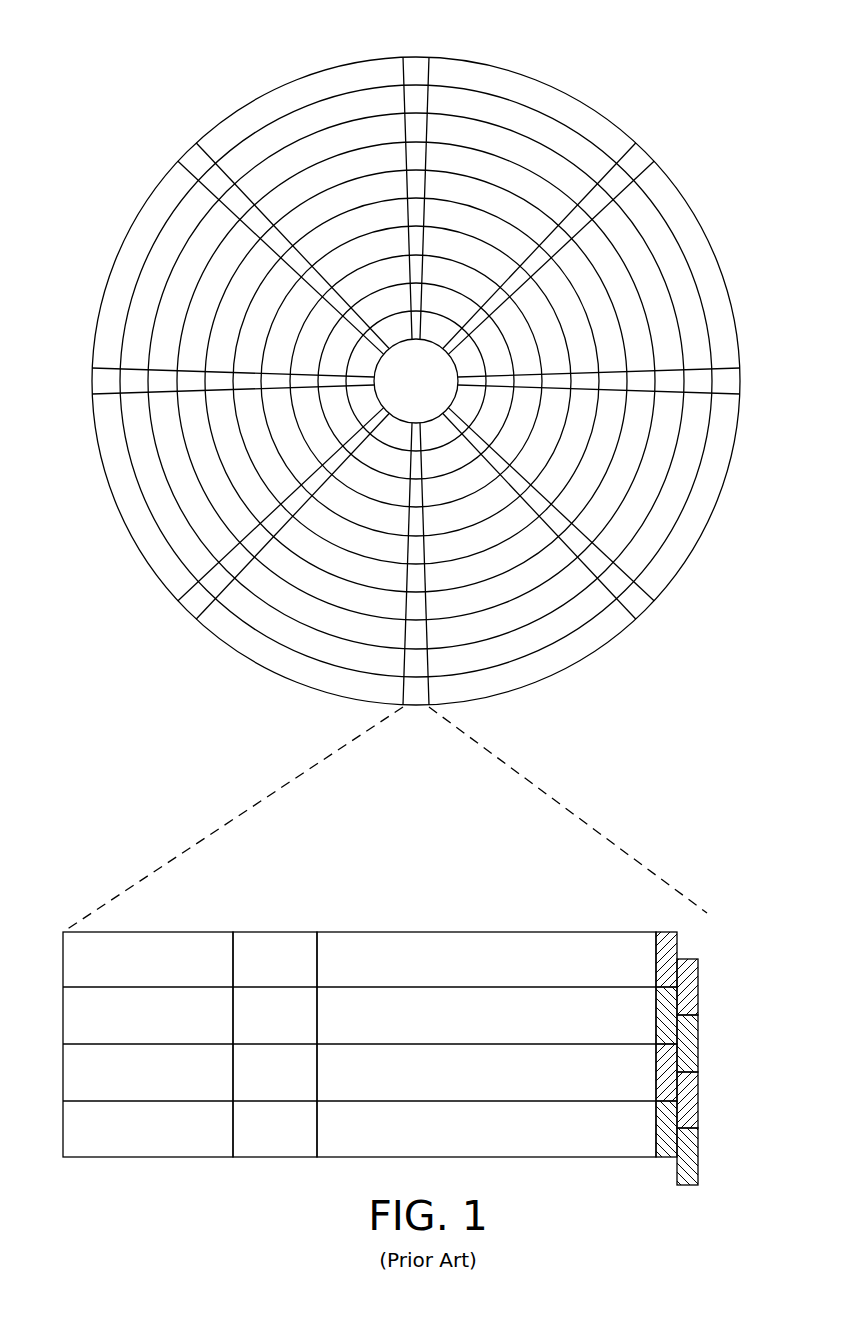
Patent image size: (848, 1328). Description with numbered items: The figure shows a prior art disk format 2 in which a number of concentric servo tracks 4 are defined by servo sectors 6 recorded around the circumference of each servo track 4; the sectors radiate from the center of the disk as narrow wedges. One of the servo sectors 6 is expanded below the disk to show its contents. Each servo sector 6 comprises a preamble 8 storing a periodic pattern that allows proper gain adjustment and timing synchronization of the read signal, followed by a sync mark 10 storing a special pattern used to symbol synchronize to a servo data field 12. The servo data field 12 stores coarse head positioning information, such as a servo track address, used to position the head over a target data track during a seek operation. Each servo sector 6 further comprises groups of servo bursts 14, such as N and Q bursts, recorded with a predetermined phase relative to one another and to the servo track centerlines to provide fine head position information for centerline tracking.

The disk format 2 is at (168, 55).
The servo track 4 is at (526, 121).
The servo sector 6 is at (417, 68).
The preamble 8 is at (158, 932).
The sync mark 10 is at (278, 932).
The servo data field 12 is at (475, 932).
The servo bursts 14 is at (702, 923).